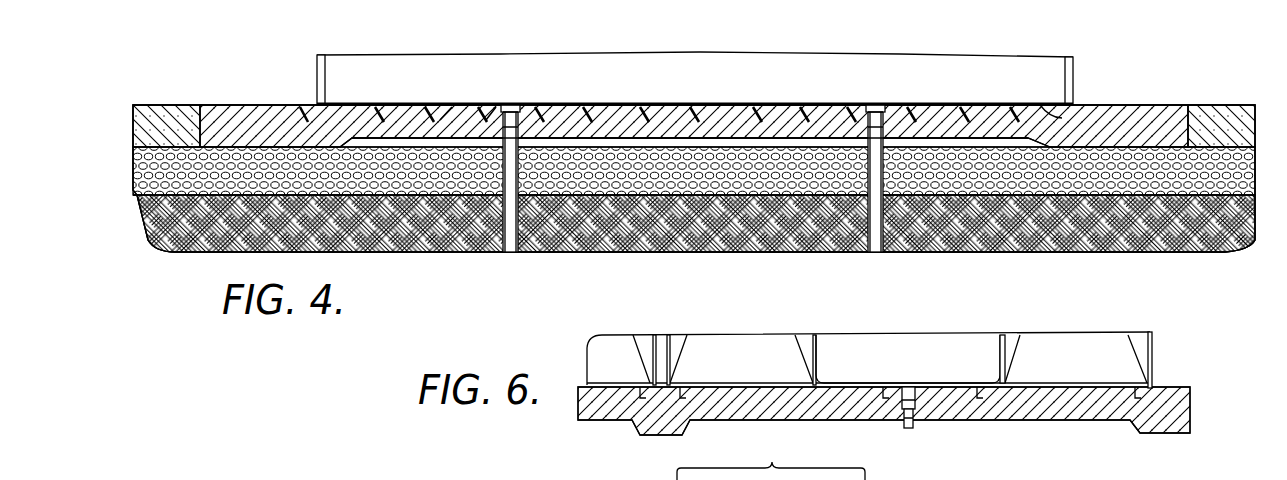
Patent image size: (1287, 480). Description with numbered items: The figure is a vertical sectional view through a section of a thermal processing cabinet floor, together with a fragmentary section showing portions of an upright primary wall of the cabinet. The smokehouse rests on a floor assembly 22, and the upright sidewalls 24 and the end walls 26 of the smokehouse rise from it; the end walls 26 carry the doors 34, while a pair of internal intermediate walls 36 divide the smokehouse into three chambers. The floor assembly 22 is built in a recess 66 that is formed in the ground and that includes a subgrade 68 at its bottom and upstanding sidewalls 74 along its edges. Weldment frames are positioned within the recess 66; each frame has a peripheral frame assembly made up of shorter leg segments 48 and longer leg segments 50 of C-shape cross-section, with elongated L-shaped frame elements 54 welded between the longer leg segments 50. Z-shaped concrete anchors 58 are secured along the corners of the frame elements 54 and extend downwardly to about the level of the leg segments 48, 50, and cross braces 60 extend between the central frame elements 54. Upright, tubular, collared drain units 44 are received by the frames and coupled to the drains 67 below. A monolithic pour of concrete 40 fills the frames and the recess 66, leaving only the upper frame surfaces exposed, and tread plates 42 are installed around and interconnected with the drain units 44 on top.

In FIG. 4, the floor assembly 22 is at (669, 76).
In FIG. 6, the floor assembly 22 is at (872, 344).
In FIG. 4, the upright sidewalls 24 is at (710, 78).
In FIG. 6, the upright sidewalls 24 is at (1155, 350).
In FIG. 4, the end walls 26 is at (325, 82).
In FIG. 6, the doors 34 is at (950, 345).
In FIG. 6, the intermediate walls 36 is at (661, 343).
In FIG. 4, the concrete 40 is at (238, 100).
In FIG. 6, the concrete 40 is at (568, 426).
In FIG. 4, the tread plates 42 is at (570, 92).
In FIG. 4, the drain units 44 is at (510, 102).
In FIG. 6, the drain units 44 is at (908, 428).
In FIG. 4, the shorter leg segments 48 is at (1062, 112).
In FIG. 6, the longer leg segments 50 is at (690, 393).
In FIG. 4, the frame elements 54 is at (414, 105).
In FIG. 4, the concrete anchors 58 is at (440, 105).
In FIG. 6, the cross braces 60 is at (770, 396).
In FIG. 4, the recess 66 is at (940, 135).
In FIG. 4, the drains 67 is at (510, 252).
In FIG. 4, the subgrade 68 is at (778, 152).
In FIG. 4, the sidewalls 74 is at (1188, 112).